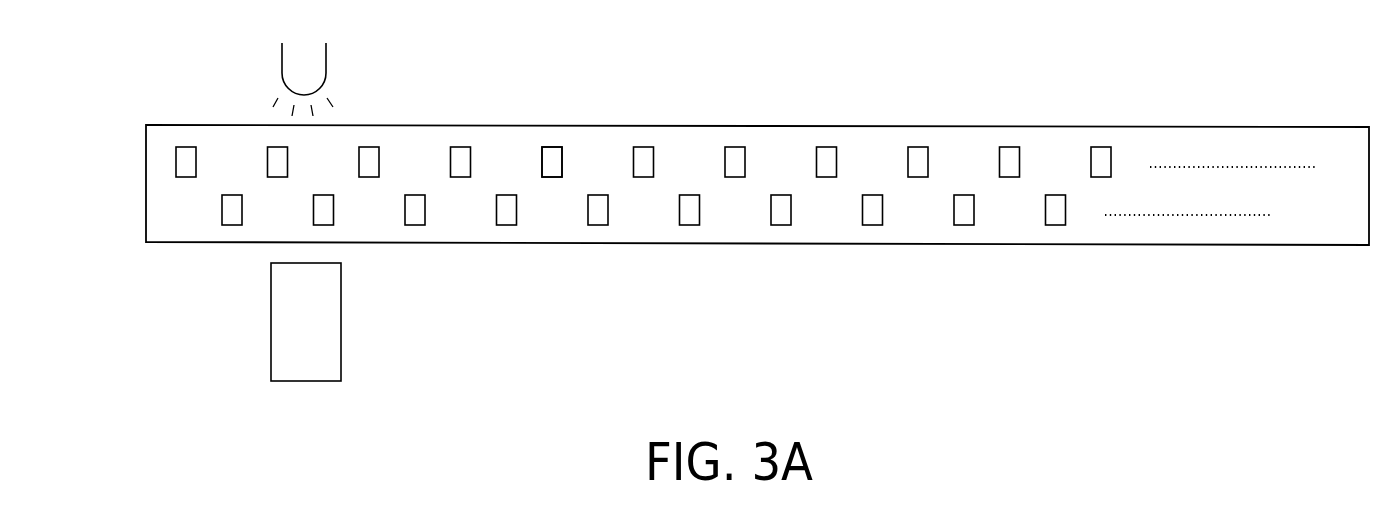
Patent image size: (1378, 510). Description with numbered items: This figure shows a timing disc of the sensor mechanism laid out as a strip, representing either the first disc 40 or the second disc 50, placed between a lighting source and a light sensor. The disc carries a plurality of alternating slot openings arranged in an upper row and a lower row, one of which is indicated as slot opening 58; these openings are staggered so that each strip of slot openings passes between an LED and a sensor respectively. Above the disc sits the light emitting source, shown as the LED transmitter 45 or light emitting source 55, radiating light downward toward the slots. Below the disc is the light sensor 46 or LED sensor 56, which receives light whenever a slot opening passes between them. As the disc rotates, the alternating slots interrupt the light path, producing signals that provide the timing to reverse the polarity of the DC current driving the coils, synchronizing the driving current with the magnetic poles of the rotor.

The disc 1 40 is at (703, 185).
The disc 2 50 is at (138, 174).
The LED transmitter 45 is at (355, 63).
The light emitting source 55 is at (312, 66).
The sensor 46 is at (259, 322).
The LED sensor 56 is at (288, 314).
The window 58 is at (554, 156).